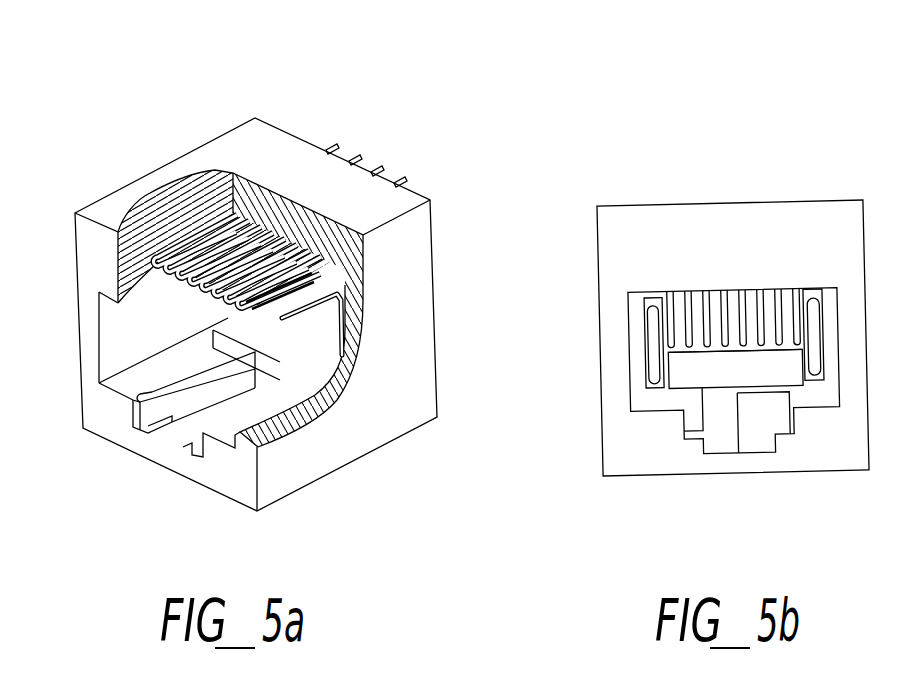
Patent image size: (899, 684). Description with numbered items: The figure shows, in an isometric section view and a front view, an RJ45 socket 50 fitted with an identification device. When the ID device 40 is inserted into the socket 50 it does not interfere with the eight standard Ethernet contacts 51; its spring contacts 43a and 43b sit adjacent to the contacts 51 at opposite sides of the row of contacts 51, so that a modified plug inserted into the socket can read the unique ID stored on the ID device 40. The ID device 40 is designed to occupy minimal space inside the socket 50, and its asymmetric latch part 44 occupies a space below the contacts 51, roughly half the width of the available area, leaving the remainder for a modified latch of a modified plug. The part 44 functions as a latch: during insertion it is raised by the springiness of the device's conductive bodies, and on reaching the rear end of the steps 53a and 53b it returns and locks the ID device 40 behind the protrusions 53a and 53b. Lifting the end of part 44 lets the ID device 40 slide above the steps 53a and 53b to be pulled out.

In FIG. 5A, the ID device 40 is at (290, 350).
In FIG. 5A, the spring contact 43a is at (345, 317).
In FIG. 5B, the spring contact 43a is at (812, 338).
In FIG. 5B, the spring contact 43b is at (653, 340).
In FIG. 5A, the latch part 44 is at (222, 430).
In FIG. 5A, the socket 50 is at (243, 150).
In FIG. 5A, the Ethernet contacts 51 is at (343, 280).
In FIG. 5B, the Ethernet contacts 51 is at (670, 297).
In FIG. 5A, the step 53a is at (170, 426).
In FIG. 5A, the step 53b is at (183, 402).